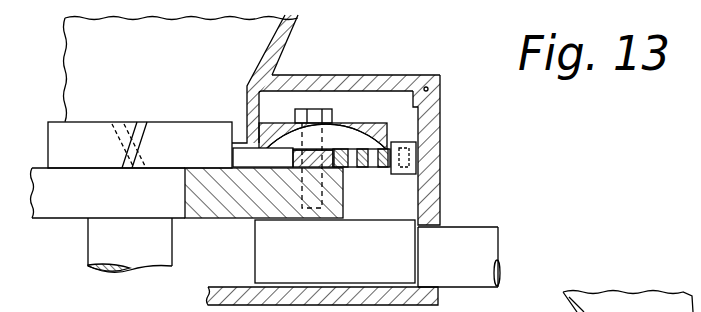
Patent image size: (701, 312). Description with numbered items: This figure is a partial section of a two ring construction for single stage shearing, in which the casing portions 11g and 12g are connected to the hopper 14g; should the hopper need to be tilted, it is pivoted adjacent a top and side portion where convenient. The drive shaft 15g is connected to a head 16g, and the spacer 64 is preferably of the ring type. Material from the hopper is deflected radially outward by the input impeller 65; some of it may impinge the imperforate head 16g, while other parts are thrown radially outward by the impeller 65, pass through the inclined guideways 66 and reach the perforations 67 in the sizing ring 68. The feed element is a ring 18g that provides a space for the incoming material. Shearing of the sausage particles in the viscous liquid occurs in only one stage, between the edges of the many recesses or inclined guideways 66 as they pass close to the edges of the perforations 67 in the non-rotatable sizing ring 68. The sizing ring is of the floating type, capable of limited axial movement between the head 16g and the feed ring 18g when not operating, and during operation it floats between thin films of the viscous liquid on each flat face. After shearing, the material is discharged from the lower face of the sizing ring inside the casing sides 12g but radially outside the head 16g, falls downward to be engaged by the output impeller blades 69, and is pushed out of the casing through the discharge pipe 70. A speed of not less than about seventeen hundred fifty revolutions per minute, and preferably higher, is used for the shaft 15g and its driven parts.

The casing portion 11g is at (360, 76).
The casing portion 12g is at (438, 183).
The hopper 14g is at (288, 38).
The drive shaft 15g is at (143, 248).
The head 16g is at (115, 200).
The feed ring 18g is at (385, 134).
The spacer 64 is at (292, 157).
The input impeller 65 is at (188, 138).
The inclined guideways 66 is at (342, 143).
The perforations 67 is at (372, 168).
The sizing ring 68 is at (388, 174).
The output impeller blades 69 is at (285, 250).
The discharge pipe 70 is at (487, 238).